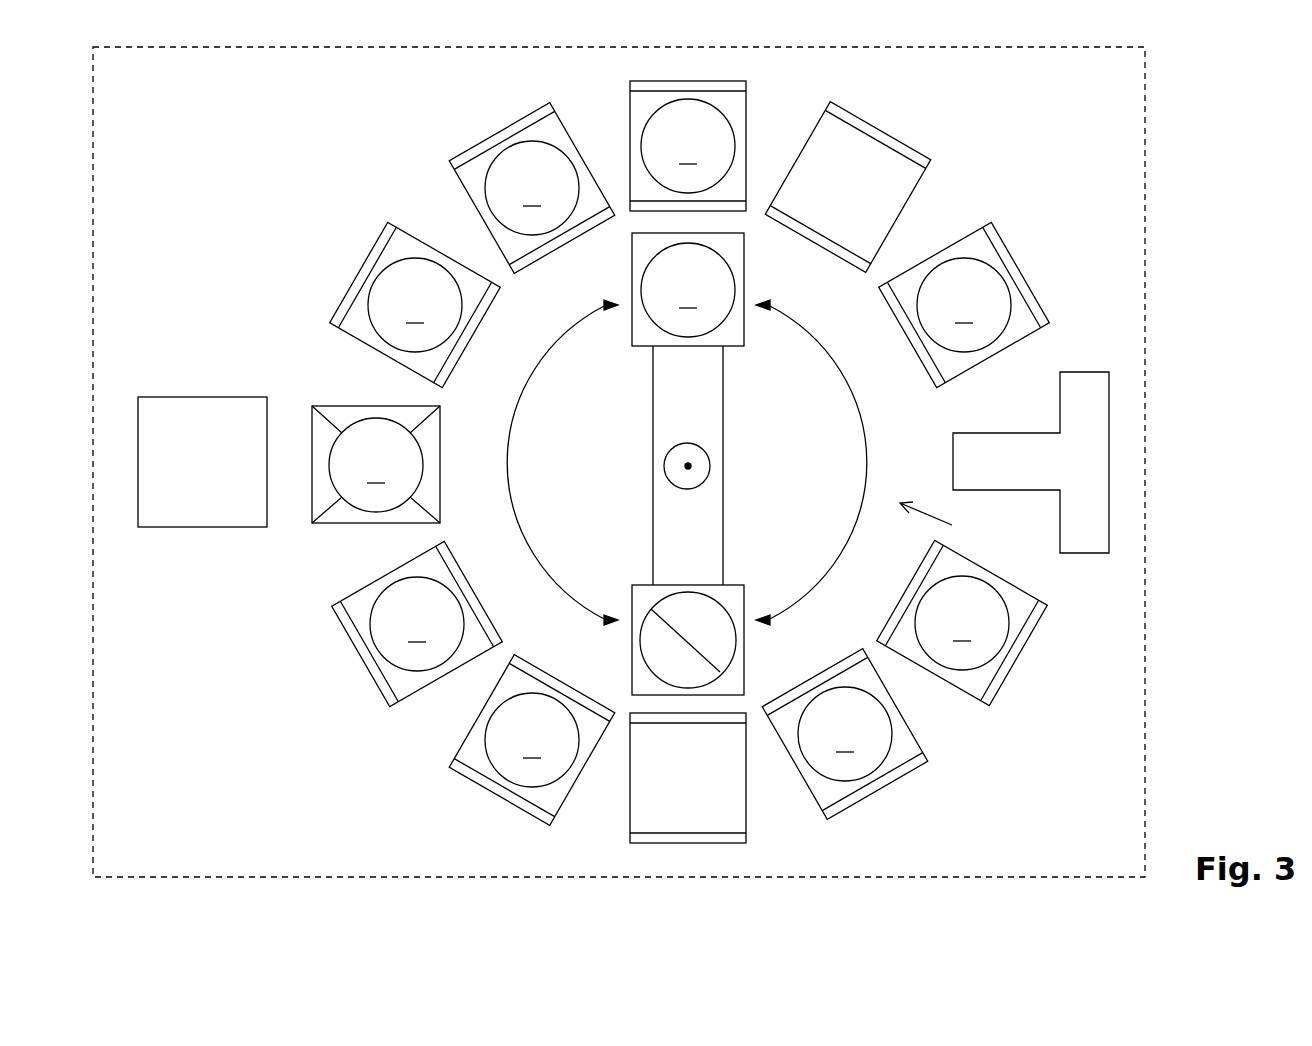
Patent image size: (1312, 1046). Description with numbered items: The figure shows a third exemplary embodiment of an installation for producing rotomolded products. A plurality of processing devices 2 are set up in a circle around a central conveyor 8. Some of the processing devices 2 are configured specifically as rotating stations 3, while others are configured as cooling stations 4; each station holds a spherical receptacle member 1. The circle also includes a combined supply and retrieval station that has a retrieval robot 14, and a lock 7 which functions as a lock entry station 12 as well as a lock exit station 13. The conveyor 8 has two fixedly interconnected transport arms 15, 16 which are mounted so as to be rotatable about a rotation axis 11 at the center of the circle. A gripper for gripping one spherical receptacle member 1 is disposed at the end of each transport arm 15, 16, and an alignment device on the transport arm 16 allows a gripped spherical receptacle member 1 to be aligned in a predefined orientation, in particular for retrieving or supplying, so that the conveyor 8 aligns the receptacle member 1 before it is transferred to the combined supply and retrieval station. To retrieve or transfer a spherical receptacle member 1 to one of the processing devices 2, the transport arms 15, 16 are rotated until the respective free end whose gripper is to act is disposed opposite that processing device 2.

The spherical receptacle member 1 is at (712, 612).
The processing device 2 is at (328, 132).
The rotating station 3 is at (407, 242).
The cooling station 4 is at (357, 595).
The lock 7 is at (1191, 366).
The conveyor 8 is at (938, 524).
The rotation axis 11 is at (684, 467).
The lock entry station 12 is at (1110, 462).
The lock exit station 13 is at (1092, 455).
The retrieval robot 14 is at (183, 505).
The transport arm 15 is at (687, 464).
The transport arm 16 is at (665, 540).